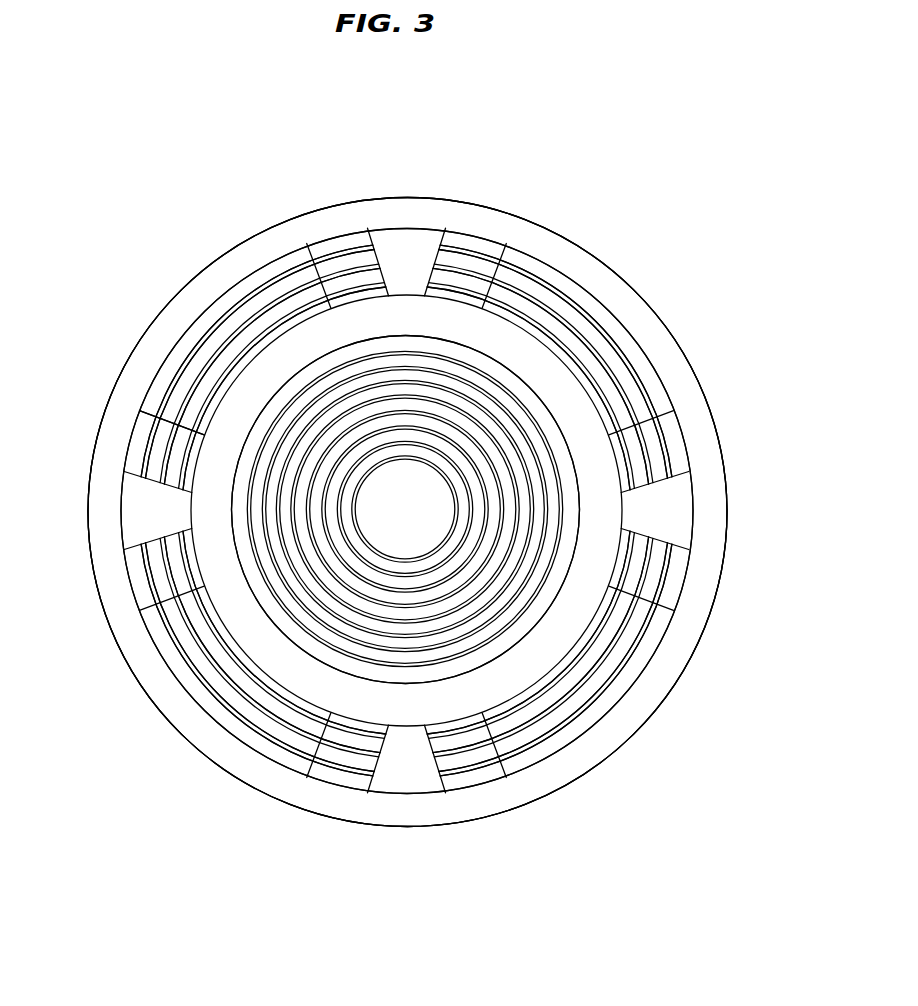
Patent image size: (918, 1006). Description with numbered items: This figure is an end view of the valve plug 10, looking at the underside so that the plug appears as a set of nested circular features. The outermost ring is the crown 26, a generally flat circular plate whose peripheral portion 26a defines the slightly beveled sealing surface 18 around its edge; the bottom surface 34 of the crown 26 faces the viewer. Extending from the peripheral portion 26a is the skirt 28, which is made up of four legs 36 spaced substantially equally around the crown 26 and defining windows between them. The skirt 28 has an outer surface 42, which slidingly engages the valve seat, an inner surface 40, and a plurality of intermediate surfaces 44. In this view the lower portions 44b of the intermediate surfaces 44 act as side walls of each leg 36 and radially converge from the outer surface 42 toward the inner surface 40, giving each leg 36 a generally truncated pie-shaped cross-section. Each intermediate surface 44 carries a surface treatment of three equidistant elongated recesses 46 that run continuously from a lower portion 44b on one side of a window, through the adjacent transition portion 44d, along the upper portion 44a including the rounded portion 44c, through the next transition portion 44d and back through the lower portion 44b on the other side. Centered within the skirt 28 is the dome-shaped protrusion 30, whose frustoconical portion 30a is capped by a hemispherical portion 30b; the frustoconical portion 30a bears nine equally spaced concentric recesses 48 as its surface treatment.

The valve plug 10 is at (530, 167).
The sealing surface 18 is at (705, 488).
The crown 26 is at (712, 373).
The peripheral portion 26a is at (638, 293).
The skirt 28 is at (418, 233).
The protrusion 30 is at (275, 380).
The frustoconical portion 30a is at (502, 602).
The hemispherical portion 30b is at (428, 533).
The bottom surface 34 is at (522, 353).
The legs 36 is at (379, 250).
The inner surface 40 is at (197, 464).
The outer surface 42 is at (172, 350).
The intermediate surfaces 44 is at (162, 446).
The upper portion 44a is at (258, 305).
The lower portion 44b is at (347, 247).
The rounded portion 44c is at (203, 347).
The transition portion 44d is at (308, 267).
The elongated recesses 46 is at (672, 580).
The concentric recesses 48 is at (520, 417).